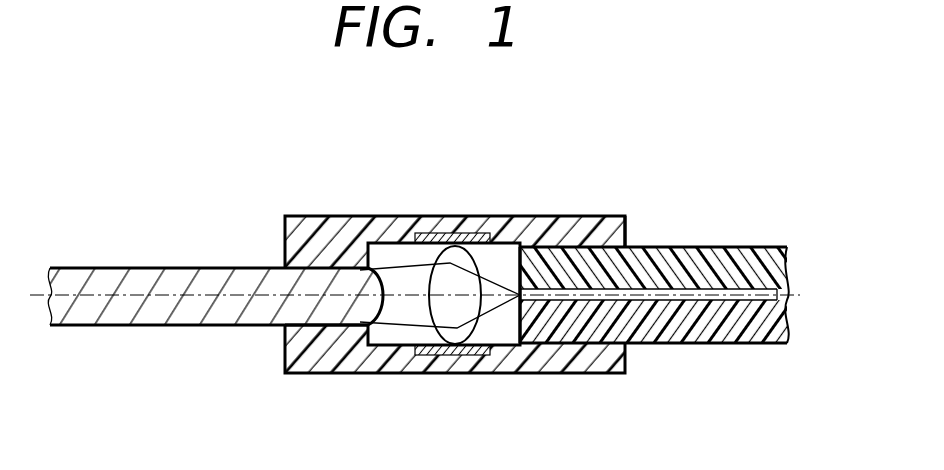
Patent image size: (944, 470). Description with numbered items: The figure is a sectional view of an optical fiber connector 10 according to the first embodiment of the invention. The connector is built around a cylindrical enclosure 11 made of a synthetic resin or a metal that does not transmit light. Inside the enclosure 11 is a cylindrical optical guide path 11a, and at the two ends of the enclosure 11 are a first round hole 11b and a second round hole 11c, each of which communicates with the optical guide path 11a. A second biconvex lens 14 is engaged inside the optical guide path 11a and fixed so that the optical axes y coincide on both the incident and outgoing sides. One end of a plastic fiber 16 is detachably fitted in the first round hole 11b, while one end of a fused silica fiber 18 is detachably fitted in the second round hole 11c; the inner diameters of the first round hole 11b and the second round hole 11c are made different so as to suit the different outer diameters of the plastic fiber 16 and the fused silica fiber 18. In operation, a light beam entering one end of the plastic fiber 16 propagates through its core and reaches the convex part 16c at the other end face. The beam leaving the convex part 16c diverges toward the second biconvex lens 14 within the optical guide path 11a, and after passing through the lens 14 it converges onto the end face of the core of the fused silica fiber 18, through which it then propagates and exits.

The optical fiber connector 10 is at (467, 180).
The cylindrical enclosure 11 is at (320, 216).
The cylindrical optical guide path 11a is at (378, 247).
The first round hole 11b is at (278, 328).
The second round hole 11c is at (624, 250).
The second biconvex lens 14 is at (462, 341).
The plastic fiber 16 is at (131, 310).
The convex part 16c is at (385, 318).
The fused silica fiber 18 is at (738, 248).
The optical axis y is at (495, 300).